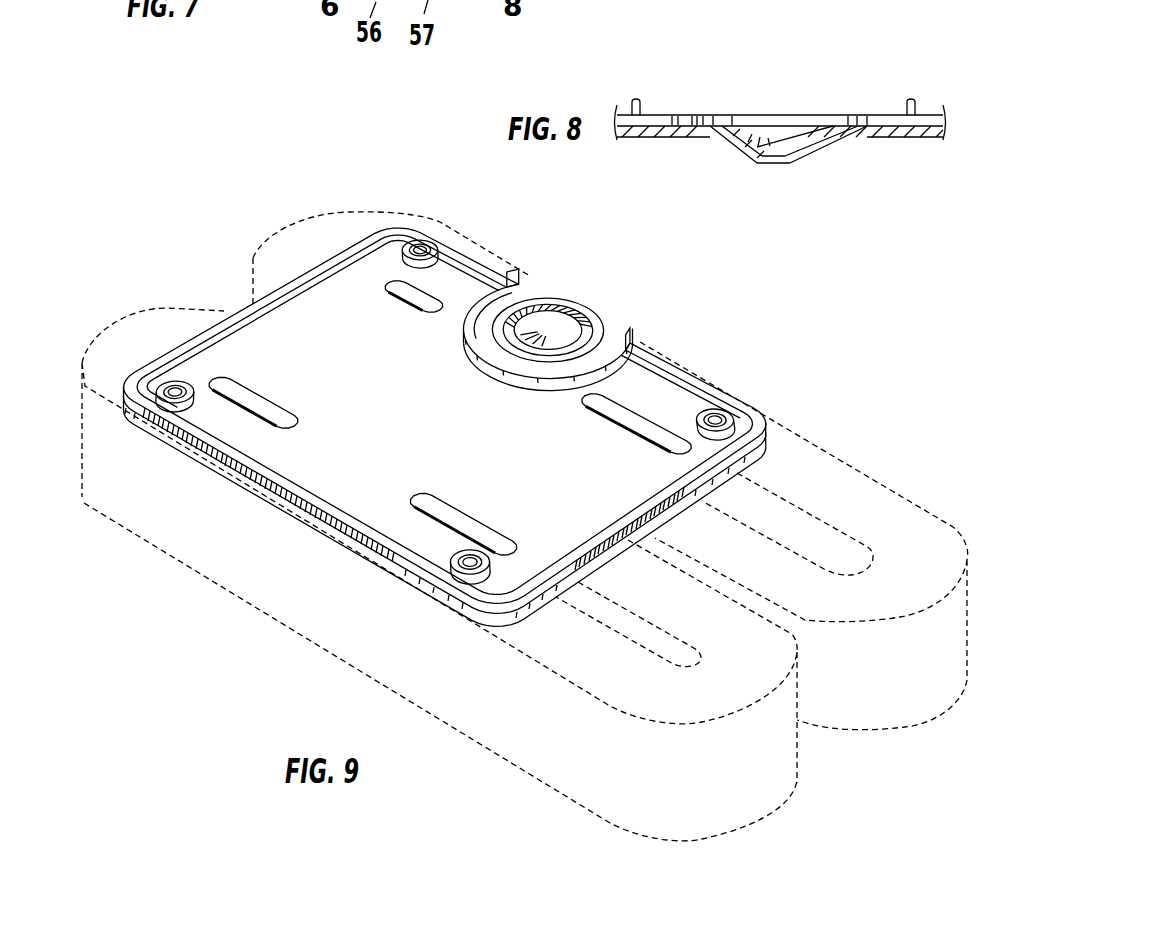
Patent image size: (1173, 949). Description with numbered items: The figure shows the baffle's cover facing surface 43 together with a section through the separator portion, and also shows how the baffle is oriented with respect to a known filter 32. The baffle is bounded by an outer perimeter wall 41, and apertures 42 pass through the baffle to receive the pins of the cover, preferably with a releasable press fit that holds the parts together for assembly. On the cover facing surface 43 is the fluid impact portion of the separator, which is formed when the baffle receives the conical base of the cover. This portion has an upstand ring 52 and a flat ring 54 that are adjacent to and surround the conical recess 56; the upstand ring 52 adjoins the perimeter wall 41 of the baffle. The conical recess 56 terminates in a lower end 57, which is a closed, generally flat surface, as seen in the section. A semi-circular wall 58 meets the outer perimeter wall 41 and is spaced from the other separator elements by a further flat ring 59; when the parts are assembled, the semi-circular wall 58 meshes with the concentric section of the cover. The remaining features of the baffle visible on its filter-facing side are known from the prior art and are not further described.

In FIG. 9, the filter 32 is at (829, 452).
In FIG. 9, the outer perimeter wall 41 is at (240, 306).
In FIG. 9, the apertures 42 is at (420, 247).
In FIG. 9, the cover facing surface 43 is at (539, 481).
In FIG. 8, the upstand ring 52 is at (685, 115).
In FIG. 9, the upstand ring 52 is at (603, 308).
In FIG. 8, the flat ring 54 is at (840, 125).
In FIG. 9, the flat ring 54 is at (549, 307).
In FIG. 8, the conical recess 56 is at (810, 150).
In FIG. 9, the conical recess 56 is at (574, 331).
In FIG. 8, the lower end 57 is at (777, 157).
In FIG. 8, the semi-circular wall 58 is at (637, 100).
In FIG. 9, the semi-circular wall 58 is at (505, 280).
In FIG. 8, the flat ring 59 is at (653, 115).